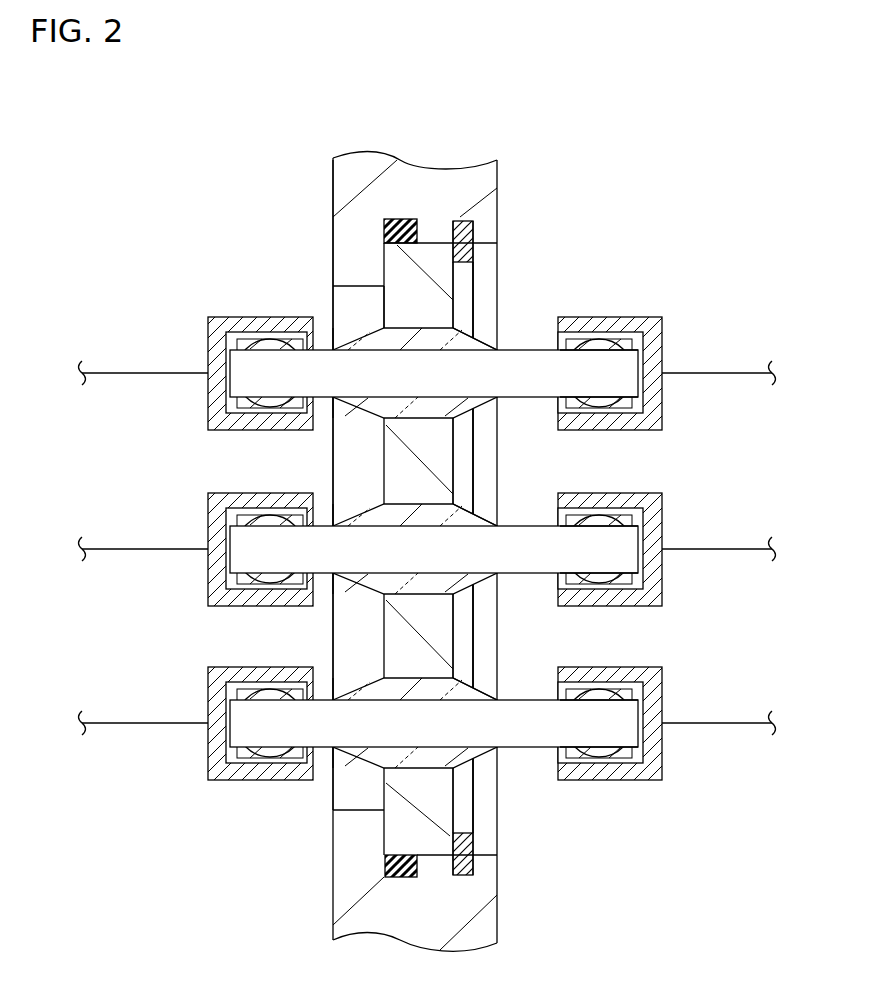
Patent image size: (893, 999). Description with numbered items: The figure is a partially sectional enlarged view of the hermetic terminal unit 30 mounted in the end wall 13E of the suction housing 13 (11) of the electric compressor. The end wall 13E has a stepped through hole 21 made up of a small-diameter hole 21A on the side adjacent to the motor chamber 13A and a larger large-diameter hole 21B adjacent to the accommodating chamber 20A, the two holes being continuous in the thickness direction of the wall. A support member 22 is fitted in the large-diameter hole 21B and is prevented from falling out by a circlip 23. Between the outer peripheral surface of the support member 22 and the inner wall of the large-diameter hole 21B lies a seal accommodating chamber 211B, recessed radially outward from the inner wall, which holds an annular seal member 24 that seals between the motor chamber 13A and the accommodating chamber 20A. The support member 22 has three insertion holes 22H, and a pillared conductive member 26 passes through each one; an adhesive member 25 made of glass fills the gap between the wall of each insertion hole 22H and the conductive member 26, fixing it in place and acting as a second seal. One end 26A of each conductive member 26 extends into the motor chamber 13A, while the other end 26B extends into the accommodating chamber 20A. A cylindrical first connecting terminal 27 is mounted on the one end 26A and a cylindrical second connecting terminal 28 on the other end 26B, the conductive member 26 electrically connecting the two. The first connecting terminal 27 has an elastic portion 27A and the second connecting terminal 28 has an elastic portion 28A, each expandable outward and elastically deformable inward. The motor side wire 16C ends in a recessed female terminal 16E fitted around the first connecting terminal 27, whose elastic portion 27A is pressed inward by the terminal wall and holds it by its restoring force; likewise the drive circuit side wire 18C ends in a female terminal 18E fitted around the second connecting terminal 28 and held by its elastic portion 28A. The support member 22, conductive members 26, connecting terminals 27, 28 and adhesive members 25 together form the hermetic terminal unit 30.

The suction housing 13 is at (418, 514).
The power transmission device 11 is at (600, 193).
The motor chamber 13A is at (78, 486).
The end wall 13E is at (333, 190).
The motor side wire 16C is at (113, 370).
The female terminal 16E is at (237, 353).
The drive circuit side wire 18C is at (744, 370).
The female terminal 18E is at (632, 353).
The accommodating chamber 20A is at (800, 486).
The through hole 21 is at (465, 112).
The small-diameter hole 21A is at (360, 297).
The large-diameter hole 21B is at (432, 250).
The seal accommodating chamber 211B is at (412, 222).
The support member 22 is at (435, 845).
The insertion hole 22H is at (455, 408).
The circlip 23 is at (475, 228).
The seal member 24 is at (384, 860).
The adhesive member 25 is at (376, 408).
The conductive member 26 is at (444, 377).
The one end 26A is at (430, 367).
The other end 26B is at (627, 360).
The first connecting terminal 27 is at (232, 400).
The elastic portion 27A is at (233, 354).
The second connecting terminal 28 is at (640, 398).
The elastic portion 28A is at (635, 354).
The hermetic terminal unit 30 is at (640, 218).